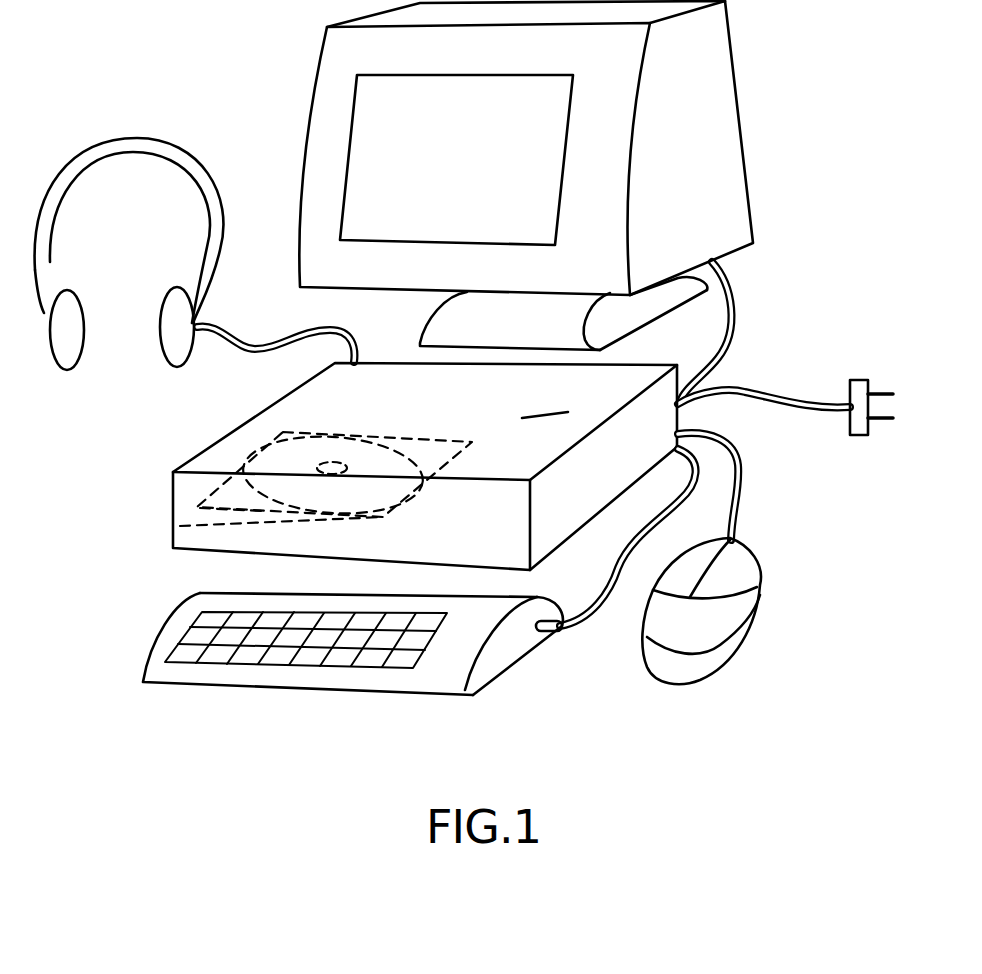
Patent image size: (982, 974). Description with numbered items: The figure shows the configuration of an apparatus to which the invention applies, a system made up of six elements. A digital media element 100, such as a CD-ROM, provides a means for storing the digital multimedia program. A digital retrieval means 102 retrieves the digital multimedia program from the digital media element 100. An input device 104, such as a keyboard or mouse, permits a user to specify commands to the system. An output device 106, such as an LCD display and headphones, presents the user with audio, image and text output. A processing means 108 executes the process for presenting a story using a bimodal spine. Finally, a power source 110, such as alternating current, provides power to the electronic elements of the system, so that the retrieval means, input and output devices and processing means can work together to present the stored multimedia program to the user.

The digital media element 100 is at (178, 527).
The digital retrieval means 102 is at (247, 427).
The input device 104 is at (647, 667).
The output device 106 is at (297, 157).
The processing means 108 is at (548, 401).
The power source 110 is at (857, 437).